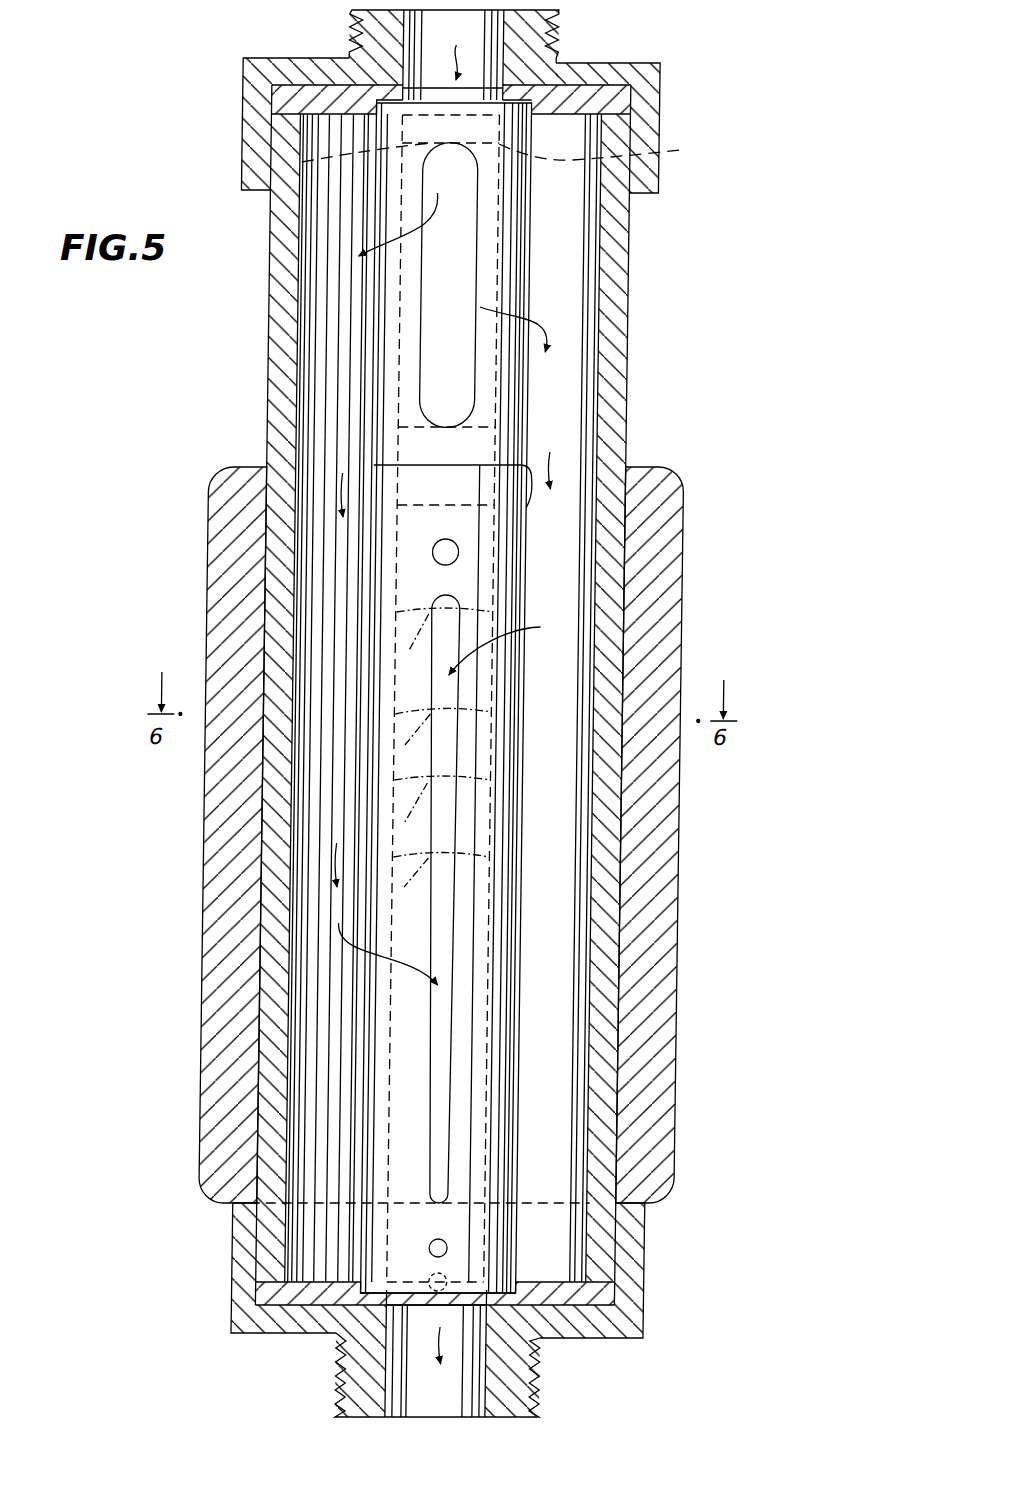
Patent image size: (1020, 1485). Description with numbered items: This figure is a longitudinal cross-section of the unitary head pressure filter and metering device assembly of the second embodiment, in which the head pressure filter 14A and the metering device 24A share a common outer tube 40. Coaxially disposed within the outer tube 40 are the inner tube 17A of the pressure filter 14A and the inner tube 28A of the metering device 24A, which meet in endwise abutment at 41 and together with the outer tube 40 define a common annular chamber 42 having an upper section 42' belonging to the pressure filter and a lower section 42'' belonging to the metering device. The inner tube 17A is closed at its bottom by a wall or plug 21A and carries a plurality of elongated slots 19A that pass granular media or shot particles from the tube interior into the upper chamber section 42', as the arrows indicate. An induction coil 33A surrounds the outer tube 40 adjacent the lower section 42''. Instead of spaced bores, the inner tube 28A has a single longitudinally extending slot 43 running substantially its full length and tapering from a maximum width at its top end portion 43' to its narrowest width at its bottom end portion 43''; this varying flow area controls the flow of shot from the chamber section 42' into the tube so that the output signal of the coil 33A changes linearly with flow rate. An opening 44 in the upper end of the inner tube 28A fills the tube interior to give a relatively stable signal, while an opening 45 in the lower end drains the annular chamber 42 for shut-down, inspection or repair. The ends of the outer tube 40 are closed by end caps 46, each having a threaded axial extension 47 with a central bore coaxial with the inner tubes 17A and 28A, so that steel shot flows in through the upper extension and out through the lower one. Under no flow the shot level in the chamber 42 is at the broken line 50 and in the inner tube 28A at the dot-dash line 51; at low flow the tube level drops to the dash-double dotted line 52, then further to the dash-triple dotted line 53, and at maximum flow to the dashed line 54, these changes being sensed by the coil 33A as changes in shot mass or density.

The head pressure filter 14A is at (642, 220).
The inner tube 17A is at (549, 375).
The elongated slots 19A is at (450, 243).
The wall or plug 21A is at (486, 426).
The metering device 24A is at (701, 478).
The inner tube 28A is at (549, 698).
The induction coil 33A is at (685, 566).
The outer tube 40 is at (638, 958).
The endwise abutment 41 is at (468, 873).
The common annular chamber 42 is at (427, 698).
The upper section of annular chamber 42' is at (637, 407).
The lower section of annular chamber 42'' is at (660, 991).
The longitudinally extending slot 43 is at (498, 901).
The top end portion of slot 43' is at (502, 599).
The bottom end portion of slot 43'' is at (502, 1181).
The opening 44 is at (460, 560).
The opening 45 is at (474, 1249).
The end cap 46 is at (647, 78).
The threaded axial extension 47 is at (556, 29).
The broken line 50 is at (675, 153).
The dot-dash line 51 is at (444, 643).
The dash-double dotted line 52 is at (443, 738).
The dash-triple dotted line 53 is at (442, 812).
The dashed line 54 is at (441, 883).